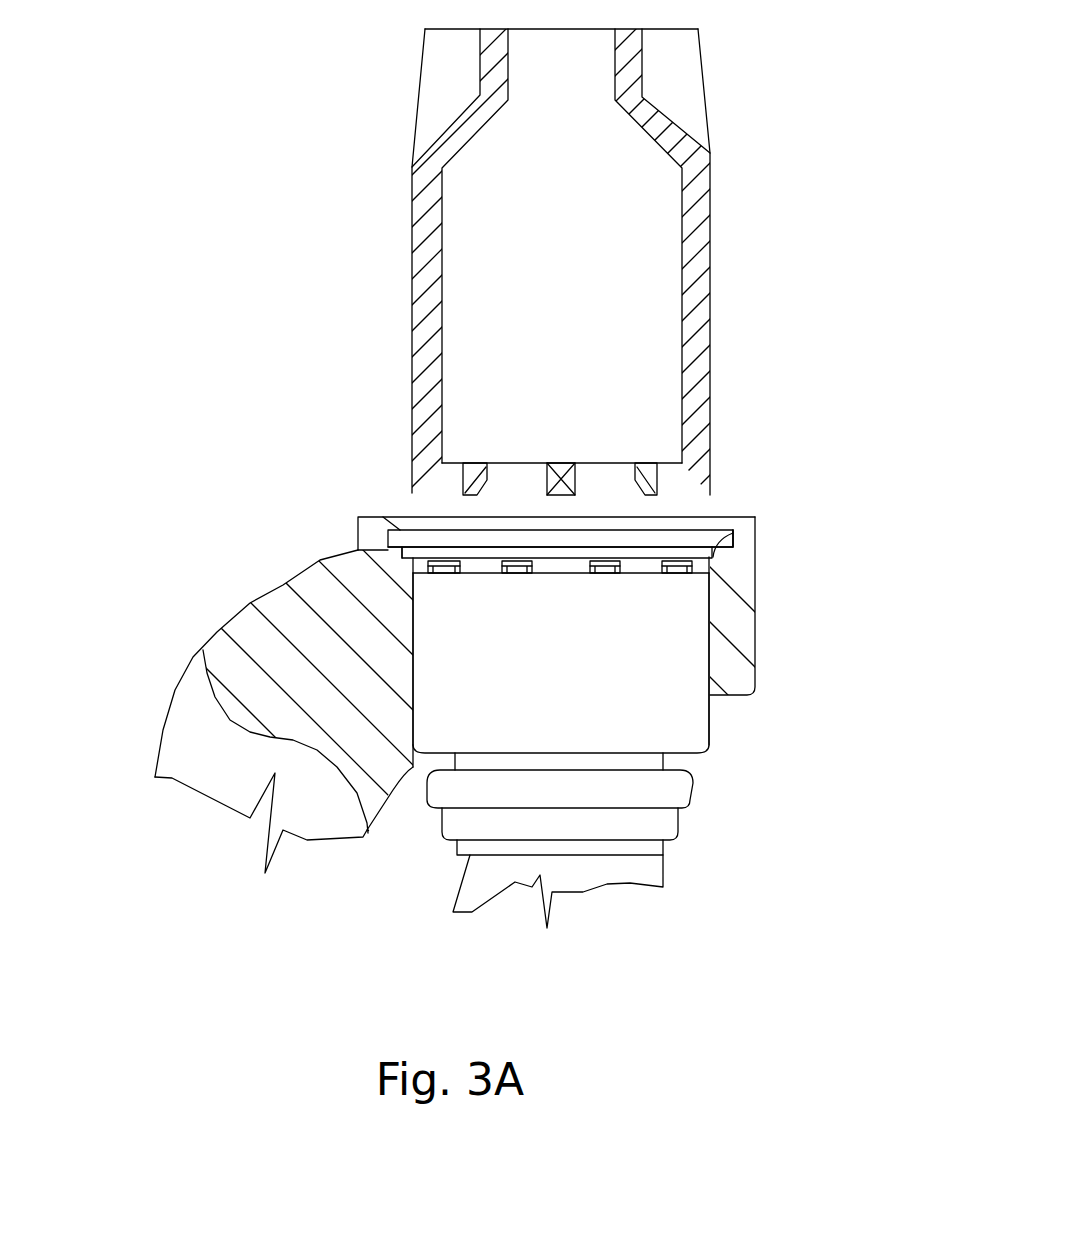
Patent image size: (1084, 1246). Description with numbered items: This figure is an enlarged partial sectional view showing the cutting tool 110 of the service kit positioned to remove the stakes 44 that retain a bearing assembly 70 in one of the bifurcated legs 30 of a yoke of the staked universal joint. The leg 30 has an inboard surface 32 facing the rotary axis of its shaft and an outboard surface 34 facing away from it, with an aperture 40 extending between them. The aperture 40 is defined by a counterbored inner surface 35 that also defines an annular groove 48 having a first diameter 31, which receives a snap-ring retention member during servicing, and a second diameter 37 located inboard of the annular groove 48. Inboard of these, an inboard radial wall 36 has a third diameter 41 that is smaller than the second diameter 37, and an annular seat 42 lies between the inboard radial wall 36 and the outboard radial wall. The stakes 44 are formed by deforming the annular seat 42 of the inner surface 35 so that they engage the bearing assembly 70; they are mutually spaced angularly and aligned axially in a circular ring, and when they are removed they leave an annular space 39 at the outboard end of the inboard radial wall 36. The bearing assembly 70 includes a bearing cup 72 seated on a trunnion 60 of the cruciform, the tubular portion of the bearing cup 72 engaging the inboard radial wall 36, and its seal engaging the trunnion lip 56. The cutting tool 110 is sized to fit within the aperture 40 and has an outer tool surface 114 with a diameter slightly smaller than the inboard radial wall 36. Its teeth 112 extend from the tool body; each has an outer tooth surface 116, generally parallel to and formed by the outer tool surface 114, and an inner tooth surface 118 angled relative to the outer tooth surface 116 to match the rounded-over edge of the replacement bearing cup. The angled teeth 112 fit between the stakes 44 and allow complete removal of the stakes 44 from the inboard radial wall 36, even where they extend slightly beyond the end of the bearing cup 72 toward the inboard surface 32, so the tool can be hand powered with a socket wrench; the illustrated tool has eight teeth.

The cutting tool 110 is at (710, 152).
The outer tool surface 114 is at (412, 226).
The outer tooth surface 116 is at (712, 462).
The teeth 112 is at (485, 470).
The inner tooth surface 118 is at (563, 465).
The outboard surface 34 is at (417, 515).
The inner surface 35 is at (413, 518).
The annular groove 48 is at (392, 538).
The second diameter 37 is at (395, 554).
The inboard radial wall 36 is at (430, 602).
The bearing cup 72 is at (447, 627).
The bifurcated legs 30 is at (187, 743).
The inboard surface 32 is at (740, 697).
The aperture 40 is at (703, 535).
The annular seat 42 is at (715, 555).
The first diameter 31 is at (745, 540).
The stakes 44 is at (642, 567).
The annular space 39 is at (640, 600).
The bearing assembly 70 is at (648, 642).
The third diameter 41 is at (697, 682).
The trunnion lip 56 is at (688, 770).
The trunnions 60 is at (603, 760).